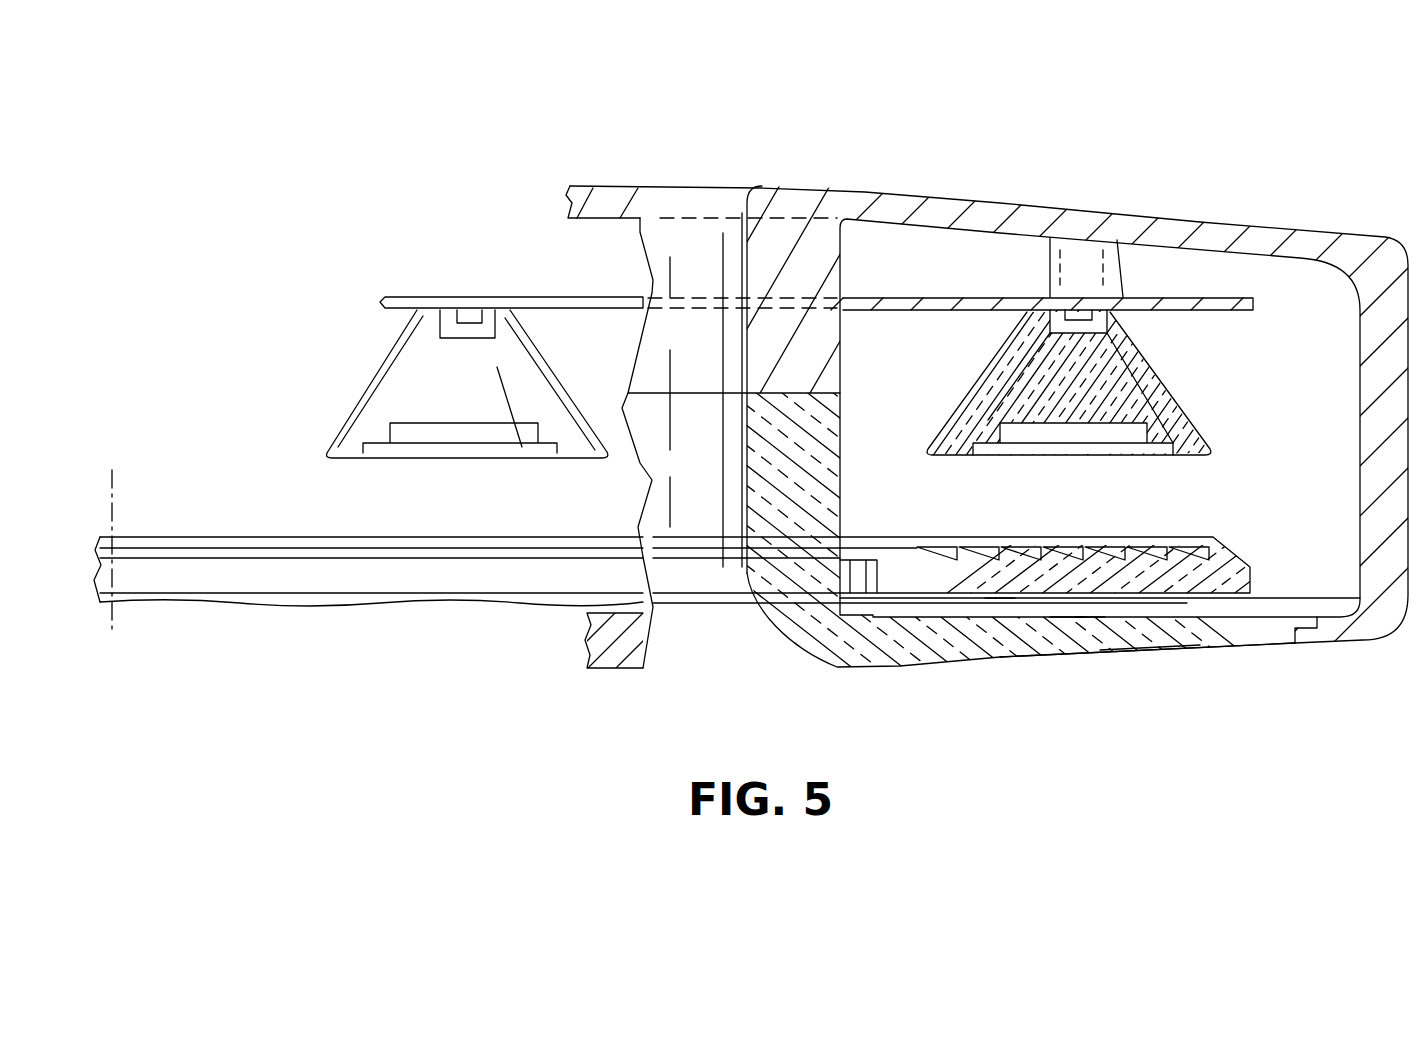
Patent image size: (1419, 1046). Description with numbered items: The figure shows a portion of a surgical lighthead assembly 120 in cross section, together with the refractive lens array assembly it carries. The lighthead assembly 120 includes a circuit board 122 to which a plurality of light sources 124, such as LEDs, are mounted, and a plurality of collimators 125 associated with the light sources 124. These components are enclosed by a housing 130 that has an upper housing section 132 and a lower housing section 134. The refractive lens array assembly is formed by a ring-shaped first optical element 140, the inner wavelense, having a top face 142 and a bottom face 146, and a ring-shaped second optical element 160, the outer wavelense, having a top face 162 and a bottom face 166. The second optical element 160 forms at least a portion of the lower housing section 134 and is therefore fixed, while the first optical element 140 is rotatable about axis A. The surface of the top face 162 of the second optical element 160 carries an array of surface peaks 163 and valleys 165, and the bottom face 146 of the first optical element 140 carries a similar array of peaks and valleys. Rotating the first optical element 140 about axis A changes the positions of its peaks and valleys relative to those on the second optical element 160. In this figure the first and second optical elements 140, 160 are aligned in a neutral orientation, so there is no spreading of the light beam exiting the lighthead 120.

The surgical lighthead assembly 120 is at (392, 183).
The circuit board 122 is at (407, 300).
The light sources 124 is at (468, 316).
The collimators 125 is at (375, 380).
The housing 130 is at (1293, 224).
The upper housing section 132 is at (945, 207).
The lower housing section 134 is at (917, 660).
The first optical element 140 is at (1247, 565).
The top face 142 is at (1142, 538).
The bottom face 146 is at (1187, 600).
The second optical element 160 is at (1140, 660).
The top face 162 is at (1000, 605).
The surface peaks 163 is at (1087, 620).
The valleys 165 is at (1067, 623).
The bottom face 166 is at (1040, 658).
The axis A is at (113, 617).